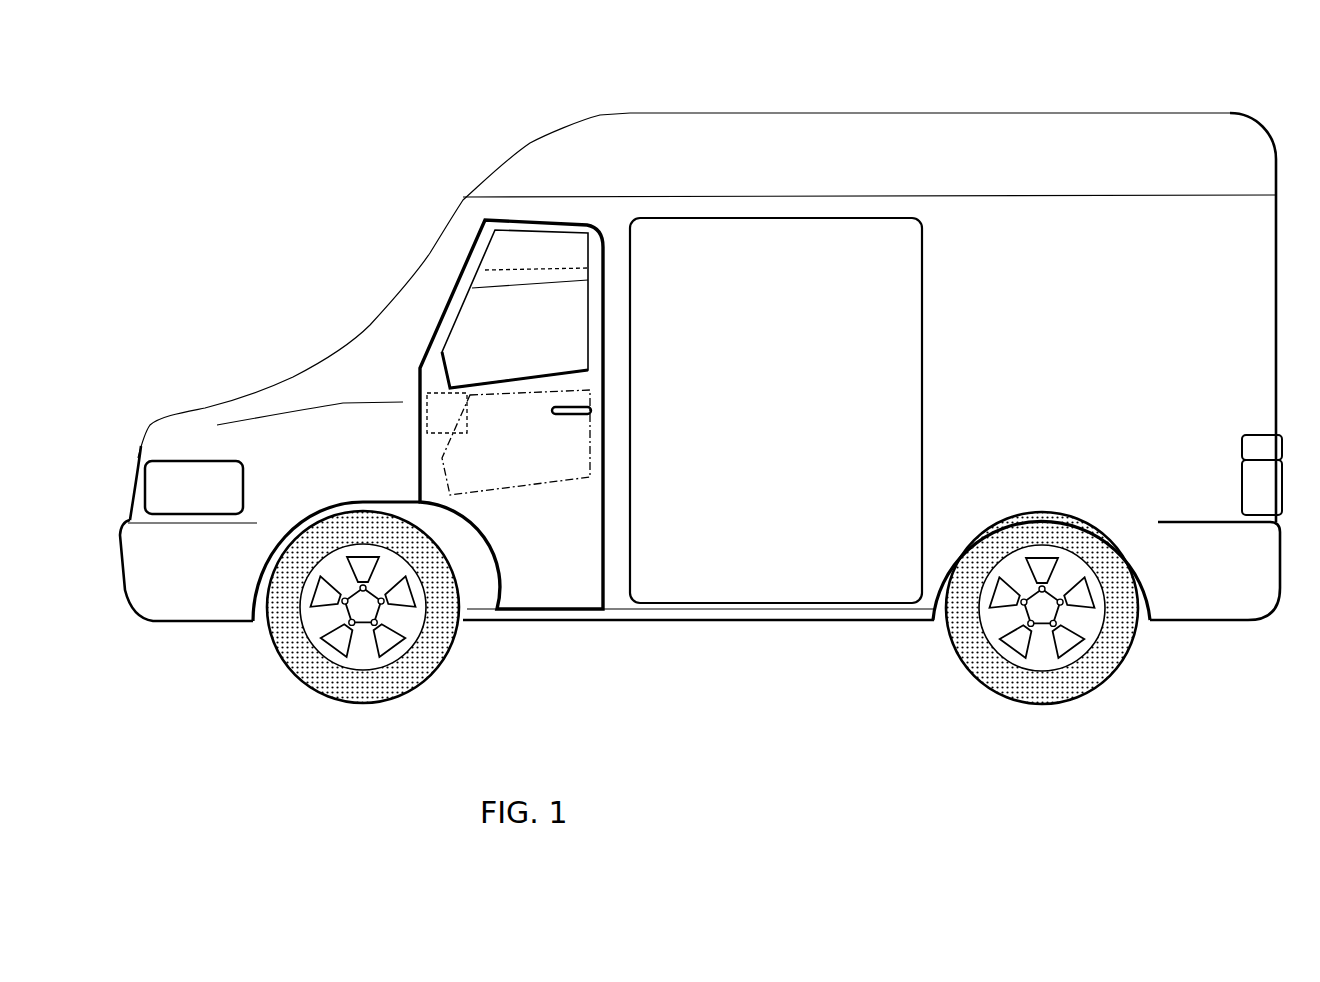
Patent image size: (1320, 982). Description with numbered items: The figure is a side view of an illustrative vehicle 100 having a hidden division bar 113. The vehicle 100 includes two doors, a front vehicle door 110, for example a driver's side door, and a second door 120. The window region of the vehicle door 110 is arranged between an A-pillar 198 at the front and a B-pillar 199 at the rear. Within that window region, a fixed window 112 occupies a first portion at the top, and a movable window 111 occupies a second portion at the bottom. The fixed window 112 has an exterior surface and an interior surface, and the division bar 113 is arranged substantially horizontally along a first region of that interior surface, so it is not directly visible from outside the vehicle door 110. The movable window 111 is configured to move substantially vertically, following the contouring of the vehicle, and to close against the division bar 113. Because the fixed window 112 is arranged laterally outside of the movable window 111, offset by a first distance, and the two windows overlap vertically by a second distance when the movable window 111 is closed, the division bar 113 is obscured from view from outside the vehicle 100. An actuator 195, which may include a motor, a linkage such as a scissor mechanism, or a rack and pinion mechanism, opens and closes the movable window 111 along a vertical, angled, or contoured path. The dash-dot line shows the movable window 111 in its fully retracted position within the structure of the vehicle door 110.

The vehicle 100 is at (440, 112).
The vehicle door 110 is at (556, 587).
The movable window 111 is at (524, 335).
The fixed window 112 is at (555, 261).
The division bar 113 is at (488, 274).
The door 120 is at (832, 309).
The actuator 195 is at (447, 413).
The A-pillar 198 is at (407, 307).
The B-pillar 199 is at (621, 262).